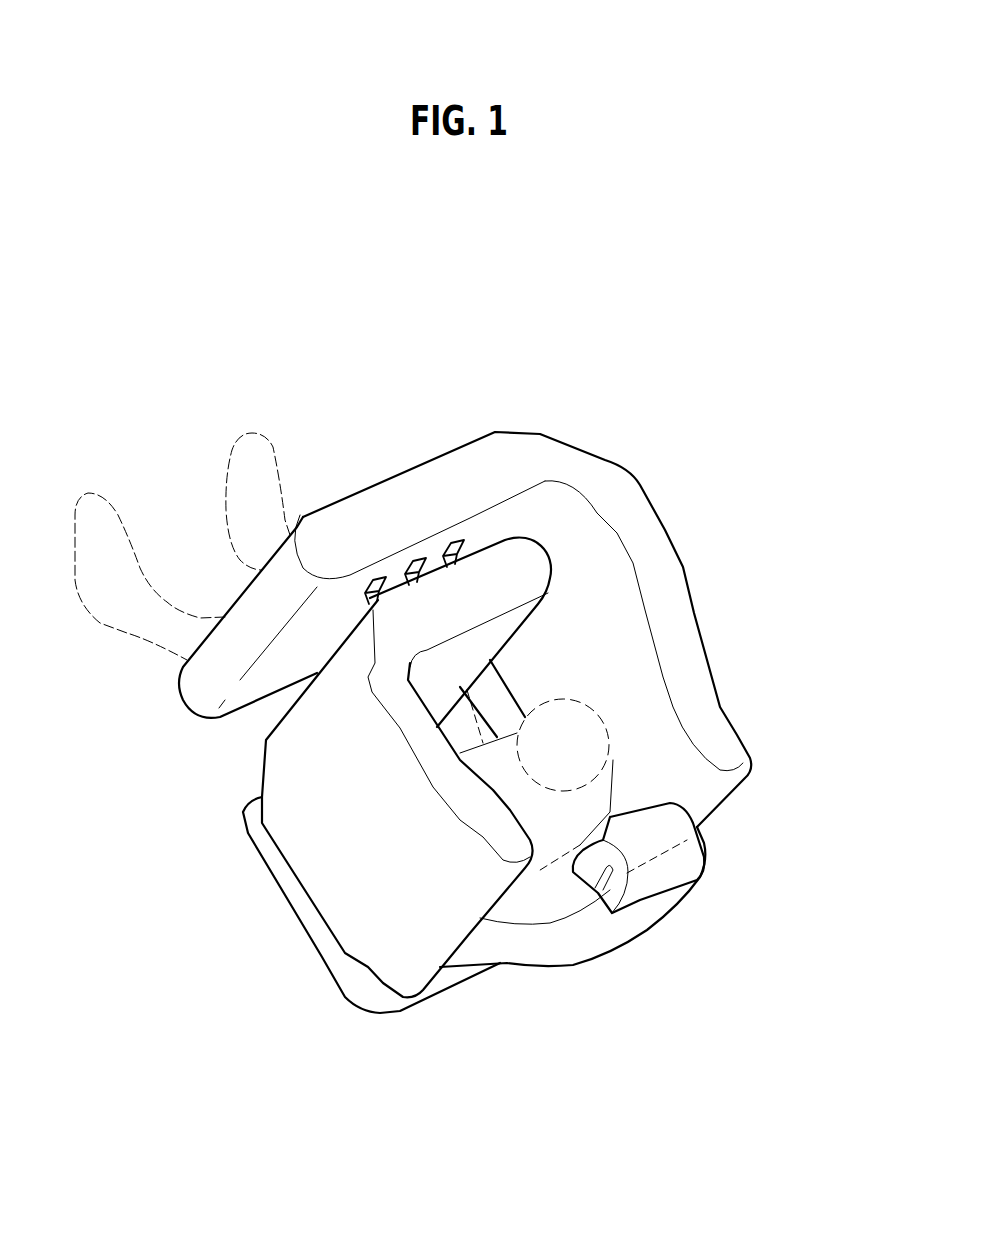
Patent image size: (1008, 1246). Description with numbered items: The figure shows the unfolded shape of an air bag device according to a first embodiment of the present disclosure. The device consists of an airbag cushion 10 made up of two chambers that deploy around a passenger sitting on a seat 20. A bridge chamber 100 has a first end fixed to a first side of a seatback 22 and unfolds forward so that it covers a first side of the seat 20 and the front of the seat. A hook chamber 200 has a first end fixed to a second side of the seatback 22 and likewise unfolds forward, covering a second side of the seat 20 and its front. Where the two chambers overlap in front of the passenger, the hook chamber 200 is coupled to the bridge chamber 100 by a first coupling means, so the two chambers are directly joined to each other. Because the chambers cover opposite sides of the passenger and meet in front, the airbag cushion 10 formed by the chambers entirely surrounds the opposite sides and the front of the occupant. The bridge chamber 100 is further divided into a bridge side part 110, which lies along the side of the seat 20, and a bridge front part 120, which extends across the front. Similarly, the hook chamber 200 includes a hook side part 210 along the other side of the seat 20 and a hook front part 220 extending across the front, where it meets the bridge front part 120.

The airbag cushion 10 is at (632, 312).
The bridge chamber 100 is at (509, 428).
The bridge side part 110 is at (583, 598).
The bridge front part 120 is at (420, 493).
The hook chamber 200 is at (541, 541).
The hook side part 210 is at (323, 857).
The hook front part 220 is at (483, 643).
The seat 20 is at (593, 966).
The seatback 22 is at (523, 947).